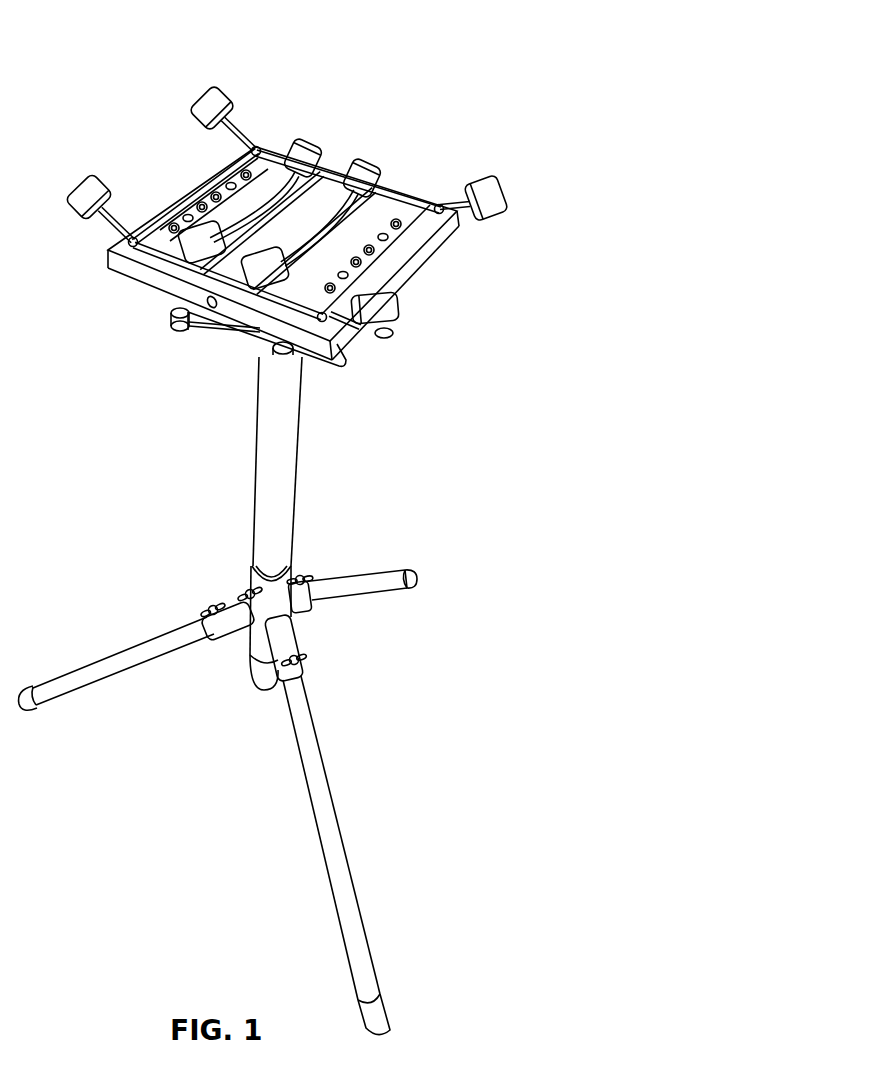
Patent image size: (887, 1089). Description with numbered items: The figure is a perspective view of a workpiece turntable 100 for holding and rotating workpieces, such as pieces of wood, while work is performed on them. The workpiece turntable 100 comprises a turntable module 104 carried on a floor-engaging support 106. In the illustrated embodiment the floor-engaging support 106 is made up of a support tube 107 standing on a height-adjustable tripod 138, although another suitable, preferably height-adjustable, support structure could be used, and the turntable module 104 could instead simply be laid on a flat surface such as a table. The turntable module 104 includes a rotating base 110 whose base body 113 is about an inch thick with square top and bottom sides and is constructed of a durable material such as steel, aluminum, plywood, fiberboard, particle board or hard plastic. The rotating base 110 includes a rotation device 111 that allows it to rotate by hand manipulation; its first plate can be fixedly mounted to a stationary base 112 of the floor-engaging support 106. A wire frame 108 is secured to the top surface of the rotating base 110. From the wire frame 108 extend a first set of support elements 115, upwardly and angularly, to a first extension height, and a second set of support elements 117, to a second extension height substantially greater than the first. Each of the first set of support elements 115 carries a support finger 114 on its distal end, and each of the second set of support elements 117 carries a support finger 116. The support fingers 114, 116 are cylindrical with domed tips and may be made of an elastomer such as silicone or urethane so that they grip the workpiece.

The workpiece turntable 100 is at (486, 43).
The turntable module 104 is at (456, 261).
The floor-engaging support 106 is at (234, 477).
The support tube 107 is at (300, 470).
The wire frame 108 is at (392, 200).
The rotating base 110 is at (312, 345).
The rotation device 111 is at (240, 353).
The stationary base 112 is at (168, 330).
The base body 113 is at (420, 263).
The support finger 114 is at (367, 157).
The first set of support elements 115 is at (240, 134).
The support finger 116 is at (205, 87).
The second set of support elements 117 is at (297, 239).
The height-adjustable tripod 138 is at (352, 611).